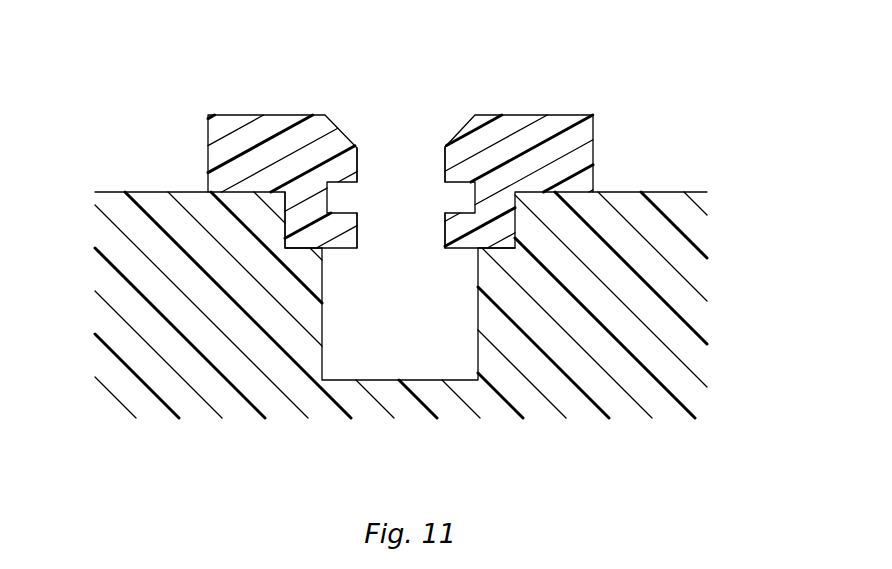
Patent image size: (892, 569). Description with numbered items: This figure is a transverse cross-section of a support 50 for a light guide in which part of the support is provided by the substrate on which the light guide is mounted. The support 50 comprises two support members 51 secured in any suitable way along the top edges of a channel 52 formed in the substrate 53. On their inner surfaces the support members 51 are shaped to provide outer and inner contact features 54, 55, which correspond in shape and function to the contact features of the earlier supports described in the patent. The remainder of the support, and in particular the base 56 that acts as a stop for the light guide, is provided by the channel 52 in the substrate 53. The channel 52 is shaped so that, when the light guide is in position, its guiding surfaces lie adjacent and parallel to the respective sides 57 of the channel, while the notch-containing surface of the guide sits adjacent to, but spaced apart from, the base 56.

The support 50 is at (630, 77).
The support members 51 is at (273, 123).
The channel 52 is at (415, 354).
The substrate 53 is at (573, 402).
The outer contact feature 54 is at (355, 156).
The inner contact feature 55 is at (445, 236).
The base 56 is at (396, 380).
The sides of the channel 57 is at (323, 380).